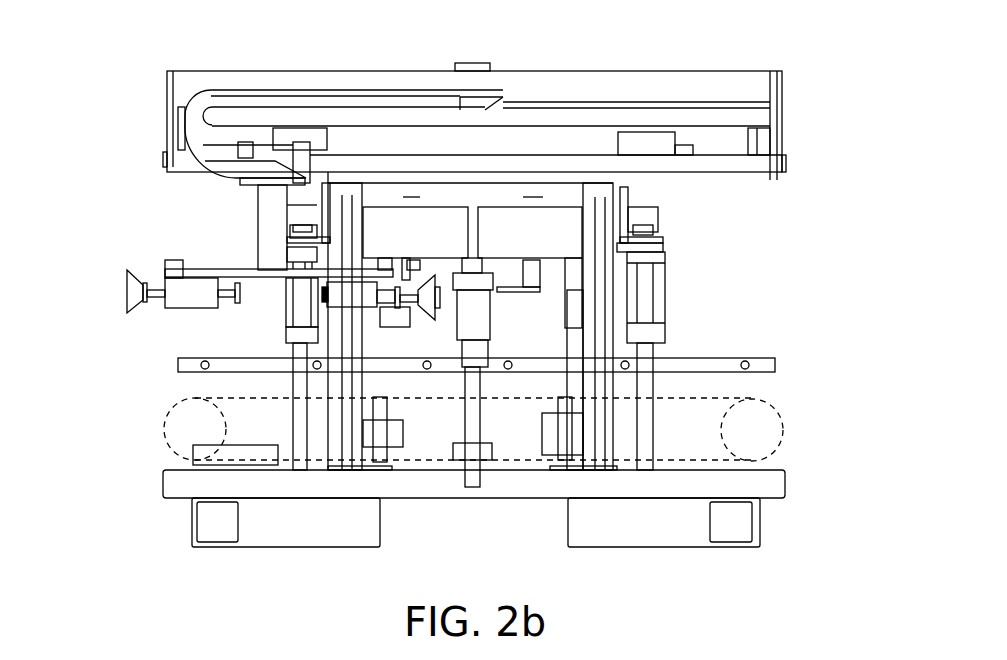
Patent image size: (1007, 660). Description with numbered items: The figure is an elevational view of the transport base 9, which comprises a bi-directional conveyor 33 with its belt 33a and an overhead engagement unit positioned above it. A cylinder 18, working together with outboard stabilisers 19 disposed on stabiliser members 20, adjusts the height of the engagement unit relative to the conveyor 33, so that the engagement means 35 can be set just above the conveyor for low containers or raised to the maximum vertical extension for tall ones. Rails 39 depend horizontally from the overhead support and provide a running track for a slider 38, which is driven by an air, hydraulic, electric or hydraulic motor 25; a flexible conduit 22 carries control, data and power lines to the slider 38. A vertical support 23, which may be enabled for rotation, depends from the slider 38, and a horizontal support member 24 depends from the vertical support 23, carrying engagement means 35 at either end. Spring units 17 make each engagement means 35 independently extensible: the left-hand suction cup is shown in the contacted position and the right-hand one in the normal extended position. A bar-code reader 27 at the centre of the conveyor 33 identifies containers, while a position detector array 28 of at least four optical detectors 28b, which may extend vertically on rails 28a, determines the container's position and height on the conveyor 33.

The transport base 9 is at (805, 68).
The spring units 17 is at (223, 307).
The cylinder 18 is at (477, 308).
The outboard stabilisers 19 is at (293, 330).
The stabiliser members 20 is at (302, 374).
The flexible conduit 22 is at (255, 102).
The vertical support 23 is at (268, 205).
The horizontal support member 24 is at (213, 275).
The motor 25 is at (357, 142).
The bar-code reader 27 is at (478, 360).
The position detector array 28 is at (768, 365).
The rails 28a is at (603, 207).
The optical detectors 28b is at (747, 373).
The conveyor 33 is at (195, 428).
The belt 33a is at (232, 402).
The engagement means 35 is at (120, 295).
The slider 38 is at (233, 150).
The rails 39 is at (522, 163).